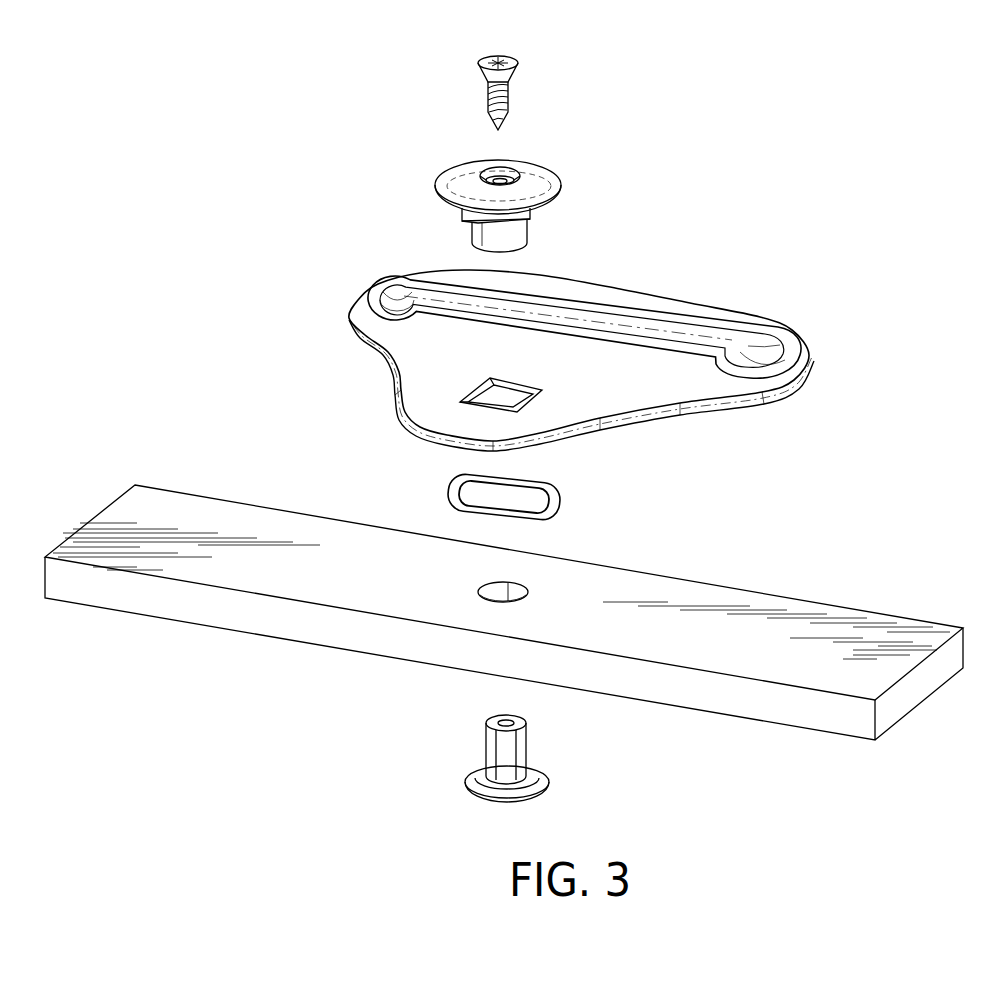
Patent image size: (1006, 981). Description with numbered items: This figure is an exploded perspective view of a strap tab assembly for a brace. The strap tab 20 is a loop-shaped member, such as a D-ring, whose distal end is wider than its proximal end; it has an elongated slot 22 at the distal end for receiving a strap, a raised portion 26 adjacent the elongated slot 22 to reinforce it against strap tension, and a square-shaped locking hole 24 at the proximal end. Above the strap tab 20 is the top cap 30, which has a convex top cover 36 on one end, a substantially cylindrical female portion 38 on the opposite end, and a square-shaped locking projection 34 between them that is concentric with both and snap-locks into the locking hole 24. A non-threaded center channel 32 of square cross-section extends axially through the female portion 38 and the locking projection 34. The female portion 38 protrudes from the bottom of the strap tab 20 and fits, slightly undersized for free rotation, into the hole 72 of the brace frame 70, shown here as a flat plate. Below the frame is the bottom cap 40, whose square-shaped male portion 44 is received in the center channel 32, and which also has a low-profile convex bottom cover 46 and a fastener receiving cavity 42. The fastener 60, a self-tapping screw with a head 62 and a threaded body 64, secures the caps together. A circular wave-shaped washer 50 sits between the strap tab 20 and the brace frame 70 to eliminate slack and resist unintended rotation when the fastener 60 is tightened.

The strap tab 20 is at (638, 350).
The elongated slot 22 is at (673, 338).
The locking hole 24 is at (492, 402).
The raised portion 26 is at (783, 336).
The top cap 30 is at (527, 193).
The center channel 32 is at (507, 173).
The locking projection 34 is at (462, 217).
The top cover 36 is at (452, 182).
The female portion 38 is at (520, 232).
The bottom cap 40 is at (525, 750).
The fastener receiving cavity 42 is at (506, 723).
The male portion 44 is at (485, 745).
The bottom cover 46 is at (477, 790).
The washer 50 is at (590, 502).
The fastener 60 is at (516, 86).
The head 62 is at (478, 72).
The threaded body 64 is at (508, 96).
The brace frame 70 is at (515, 608).
The hole 72 is at (493, 588).